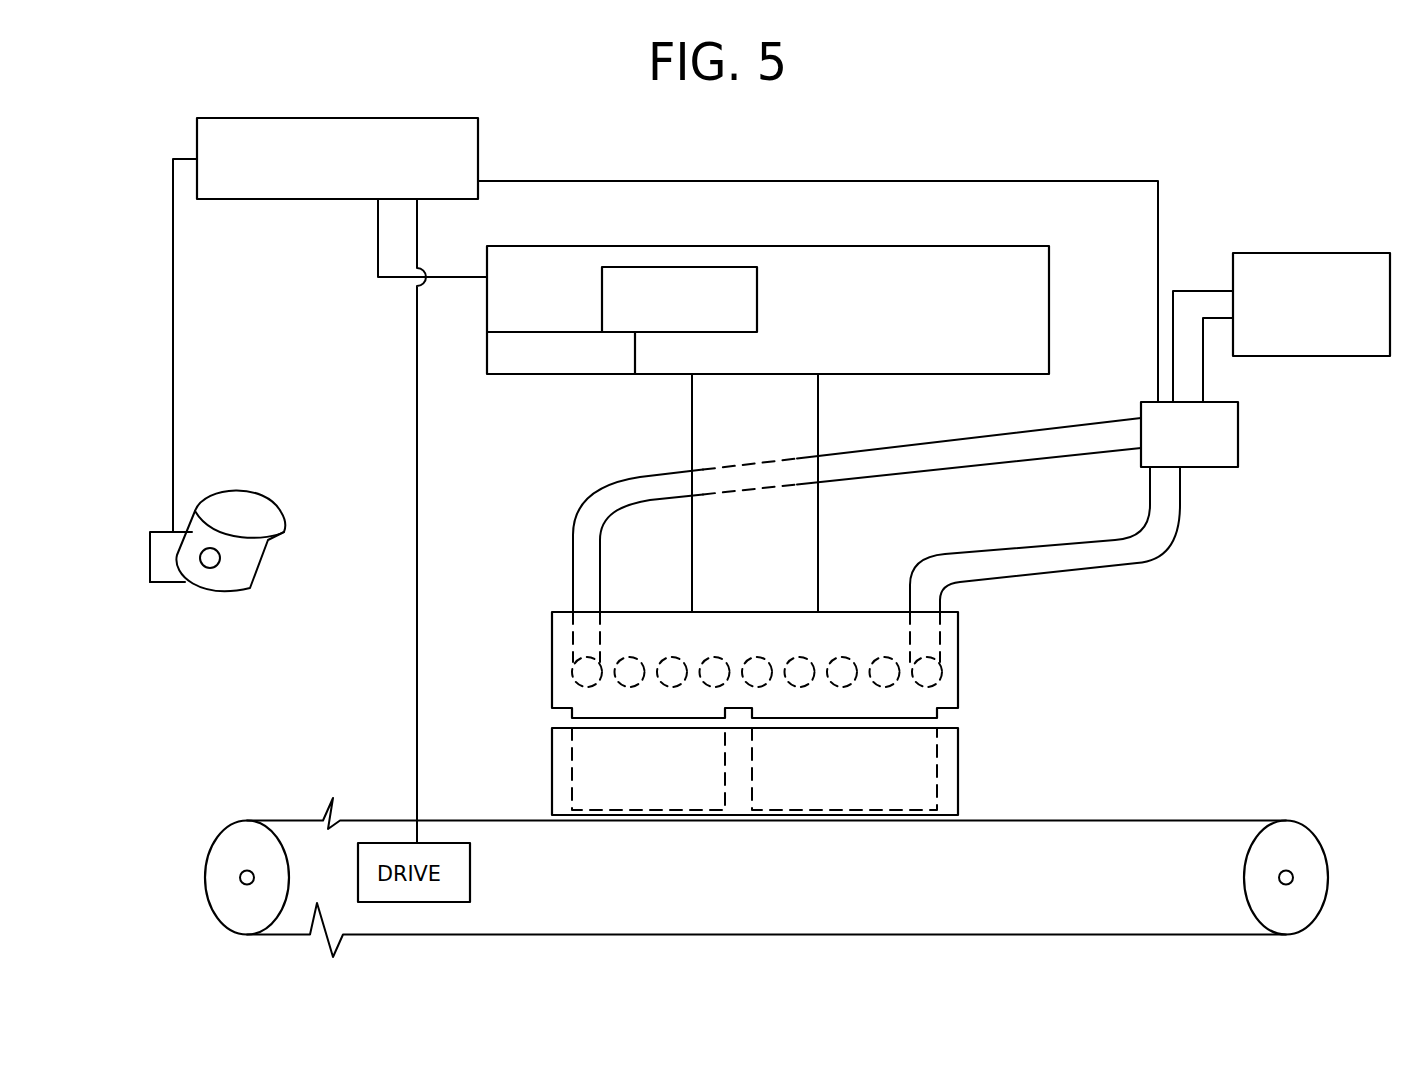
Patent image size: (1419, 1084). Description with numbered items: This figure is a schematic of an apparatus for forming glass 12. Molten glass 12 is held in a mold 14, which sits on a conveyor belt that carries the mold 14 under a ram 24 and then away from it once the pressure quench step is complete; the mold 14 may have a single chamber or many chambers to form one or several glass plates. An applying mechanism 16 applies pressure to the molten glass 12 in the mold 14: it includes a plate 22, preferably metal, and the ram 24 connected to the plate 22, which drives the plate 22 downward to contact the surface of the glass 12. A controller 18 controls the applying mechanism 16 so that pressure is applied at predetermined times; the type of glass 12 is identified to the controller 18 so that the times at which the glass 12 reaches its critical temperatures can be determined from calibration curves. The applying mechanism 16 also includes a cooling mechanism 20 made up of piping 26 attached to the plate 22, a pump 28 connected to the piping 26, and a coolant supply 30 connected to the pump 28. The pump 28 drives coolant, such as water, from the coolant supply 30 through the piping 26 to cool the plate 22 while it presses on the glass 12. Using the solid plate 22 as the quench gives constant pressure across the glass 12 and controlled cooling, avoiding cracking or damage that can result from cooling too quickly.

The glass 12 is at (272, 512).
The mold 14 is at (550, 778).
The applying mechanism 16 is at (1049, 208).
The controller 18 is at (478, 157).
The cooling mechanism 20 is at (1328, 190).
The plate 22 is at (804, 643).
The ram 24 is at (765, 556).
The piping 26 is at (575, 530).
The pump 28 is at (1238, 420).
The coolant supply 30 is at (1305, 253).